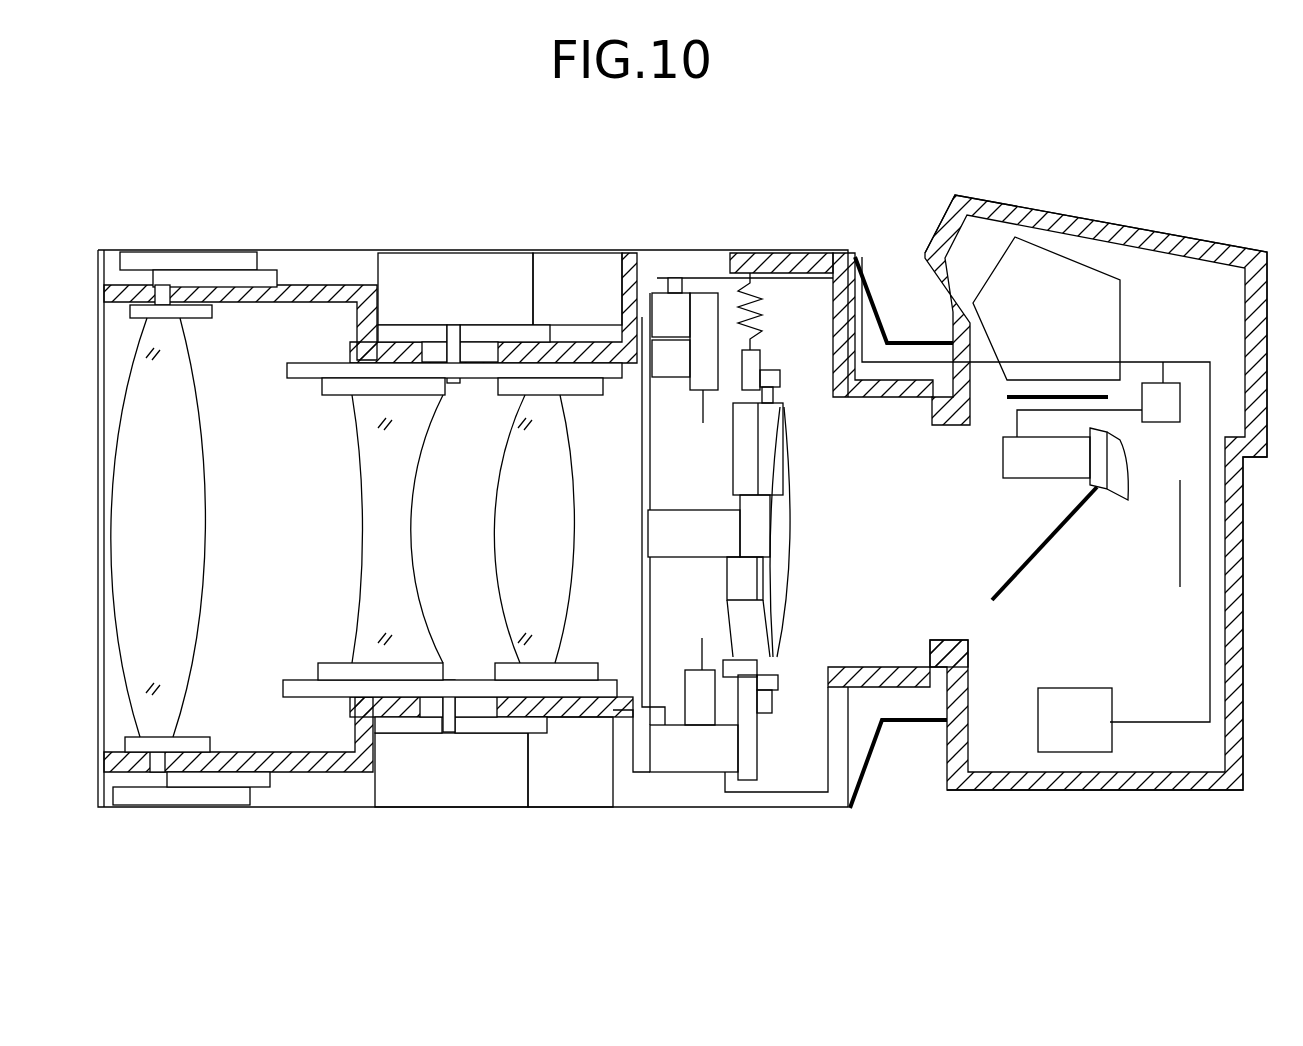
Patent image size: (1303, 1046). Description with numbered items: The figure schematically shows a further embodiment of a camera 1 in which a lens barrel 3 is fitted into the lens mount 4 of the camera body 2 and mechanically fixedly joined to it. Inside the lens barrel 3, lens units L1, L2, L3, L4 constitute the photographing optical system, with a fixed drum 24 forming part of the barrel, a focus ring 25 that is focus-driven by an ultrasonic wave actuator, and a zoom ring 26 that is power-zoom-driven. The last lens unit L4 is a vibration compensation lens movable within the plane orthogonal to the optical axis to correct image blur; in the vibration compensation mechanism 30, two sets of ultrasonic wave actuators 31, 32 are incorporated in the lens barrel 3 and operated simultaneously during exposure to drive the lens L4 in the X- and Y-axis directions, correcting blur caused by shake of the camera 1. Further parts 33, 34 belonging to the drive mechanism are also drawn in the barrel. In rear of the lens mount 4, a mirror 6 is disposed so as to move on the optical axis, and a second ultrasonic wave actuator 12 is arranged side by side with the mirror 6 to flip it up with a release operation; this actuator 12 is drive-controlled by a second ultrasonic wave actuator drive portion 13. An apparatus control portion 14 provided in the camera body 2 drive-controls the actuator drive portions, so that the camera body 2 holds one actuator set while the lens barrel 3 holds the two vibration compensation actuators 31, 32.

The camera 1 is at (1088, 190).
The camera body 2 is at (1243, 565).
The lens barrel 3 is at (472, 808).
The lens mount 4 is at (958, 672).
The mirror 6 is at (1034, 554).
The second ultrasonic wave actuator 12 is at (1003, 462).
The second ultrasonic wave actuator drive portion 13 is at (1160, 422).
The apparatus control portion 14 is at (1072, 752).
The fixed drum 24 is at (332, 765).
The focus ring 25 is at (196, 276).
The zoom ring 26 is at (423, 334).
The vibration compensation mechanism 30 is at (760, 300).
The first ultrasonic wave actuator 31 is at (693, 762).
The second ultrasonic wave actuator 32 is at (686, 545).
The gear 33 is at (672, 300).
The gear 34 is at (677, 368).
The lens unit L1 is at (195, 540).
The lens unit L2 is at (370, 560).
The lens unit L3 is at (502, 563).
The vibration compensation lens L4 is at (764, 633).